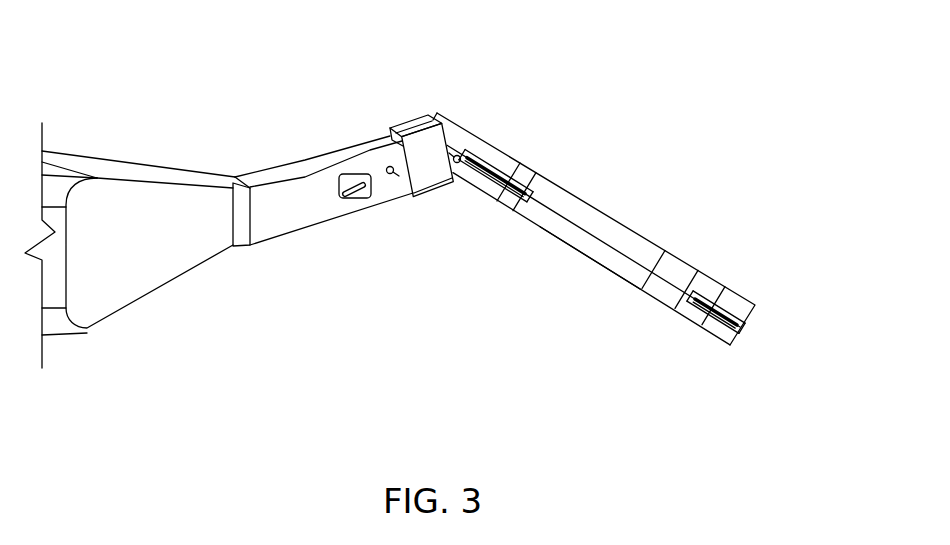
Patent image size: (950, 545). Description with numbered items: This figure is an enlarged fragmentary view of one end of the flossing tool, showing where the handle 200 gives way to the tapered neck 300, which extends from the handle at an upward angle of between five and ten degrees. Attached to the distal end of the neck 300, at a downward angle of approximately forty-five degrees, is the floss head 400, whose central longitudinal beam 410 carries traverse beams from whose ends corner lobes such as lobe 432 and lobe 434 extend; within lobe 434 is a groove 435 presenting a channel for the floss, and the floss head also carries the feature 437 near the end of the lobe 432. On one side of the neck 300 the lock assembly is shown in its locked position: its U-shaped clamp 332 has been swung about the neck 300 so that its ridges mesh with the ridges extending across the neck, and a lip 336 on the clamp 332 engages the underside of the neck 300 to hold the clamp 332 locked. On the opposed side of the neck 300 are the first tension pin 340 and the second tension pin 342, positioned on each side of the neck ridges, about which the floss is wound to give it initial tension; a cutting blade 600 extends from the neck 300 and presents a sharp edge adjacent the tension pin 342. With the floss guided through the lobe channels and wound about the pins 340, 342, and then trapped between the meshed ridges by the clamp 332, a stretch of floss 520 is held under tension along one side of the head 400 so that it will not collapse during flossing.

The handle 200 is at (128, 126).
The neck 300 is at (247, 264).
The cutting blade 600 is at (344, 197).
The U-shaped clamp 332 is at (410, 118).
The lip 336 is at (440, 197).
The second tension pin 342 is at (393, 175).
The first tension pin 340 is at (462, 152).
The floss head 400 is at (633, 180).
The central longitudinal beam 410 is at (625, 236).
The second stretch of floss 520 is at (572, 253).
The corner lobe 434 is at (505, 157).
The groove 435 is at (498, 185).
The corner lobe 432 is at (712, 322).
The end rail lip 437 is at (741, 328).